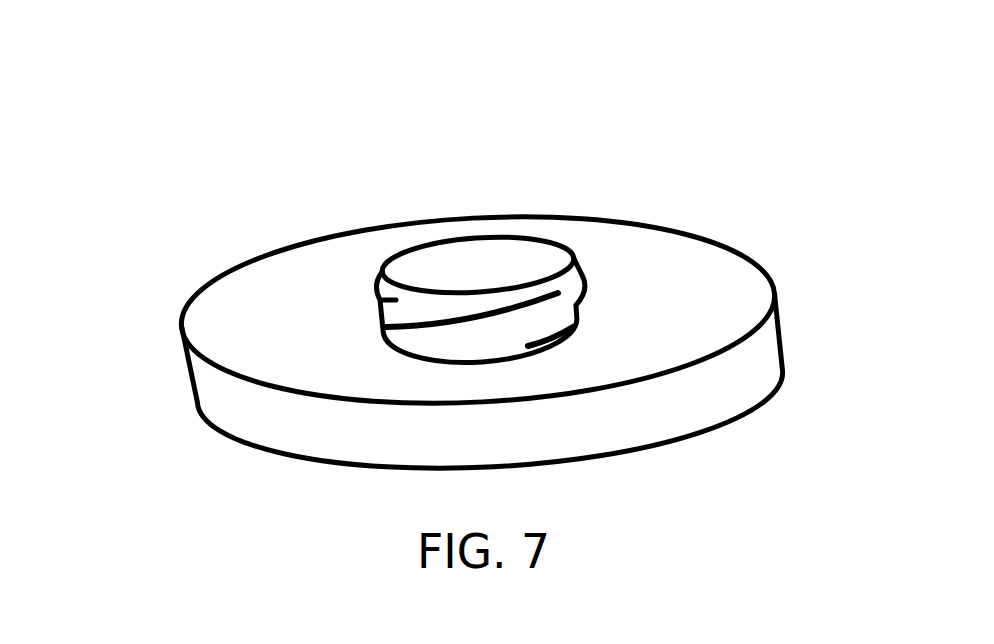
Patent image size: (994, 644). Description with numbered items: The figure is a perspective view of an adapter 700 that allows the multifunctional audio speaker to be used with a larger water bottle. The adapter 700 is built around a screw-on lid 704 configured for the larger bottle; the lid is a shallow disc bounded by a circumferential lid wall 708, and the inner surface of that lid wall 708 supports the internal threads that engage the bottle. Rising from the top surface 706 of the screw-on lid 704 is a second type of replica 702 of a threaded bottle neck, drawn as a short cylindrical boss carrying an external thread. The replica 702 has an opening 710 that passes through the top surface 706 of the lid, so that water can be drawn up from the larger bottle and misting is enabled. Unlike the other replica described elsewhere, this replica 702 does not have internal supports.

The adapter 700 is at (252, 87).
The replica 702 is at (413, 307).
The screw-on lid 704 is at (263, 363).
The top surface 706 is at (677, 298).
The circumferential lid wall 708 is at (750, 372).
The opening 710 is at (508, 257).